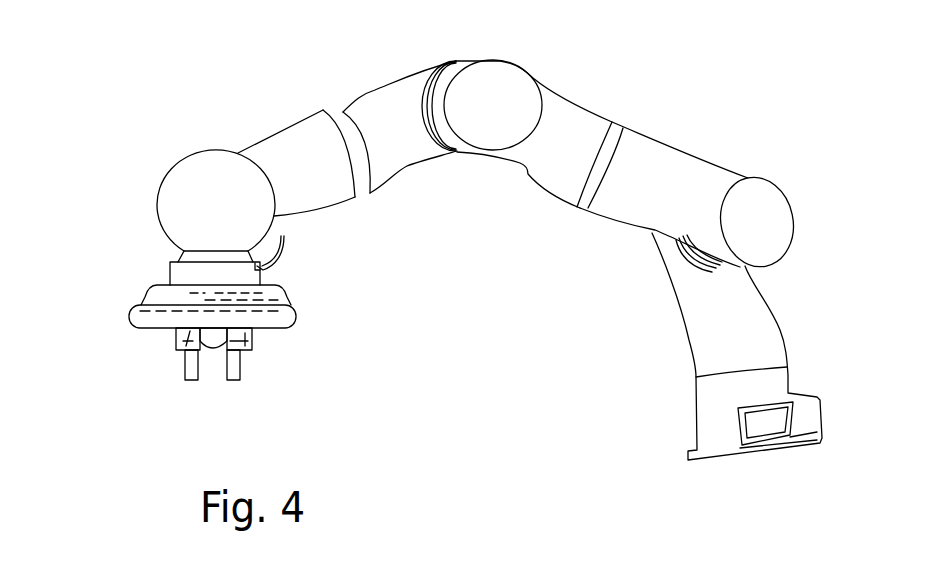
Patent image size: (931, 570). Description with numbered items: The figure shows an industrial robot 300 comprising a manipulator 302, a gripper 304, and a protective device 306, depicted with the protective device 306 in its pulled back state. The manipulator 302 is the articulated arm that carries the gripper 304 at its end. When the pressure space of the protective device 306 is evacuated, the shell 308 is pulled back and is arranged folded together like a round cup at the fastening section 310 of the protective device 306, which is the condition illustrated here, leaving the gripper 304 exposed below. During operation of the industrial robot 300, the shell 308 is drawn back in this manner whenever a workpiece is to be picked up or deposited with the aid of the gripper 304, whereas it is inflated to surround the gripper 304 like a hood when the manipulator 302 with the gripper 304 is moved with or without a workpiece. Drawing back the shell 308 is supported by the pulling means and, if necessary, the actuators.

The industrial robot 300 is at (648, 116).
The manipulator 302 is at (273, 147).
The gripper 304 is at (240, 355).
The protective device 306 is at (270, 313).
The shell 308 is at (270, 328).
The fastening section 310 is at (172, 273).